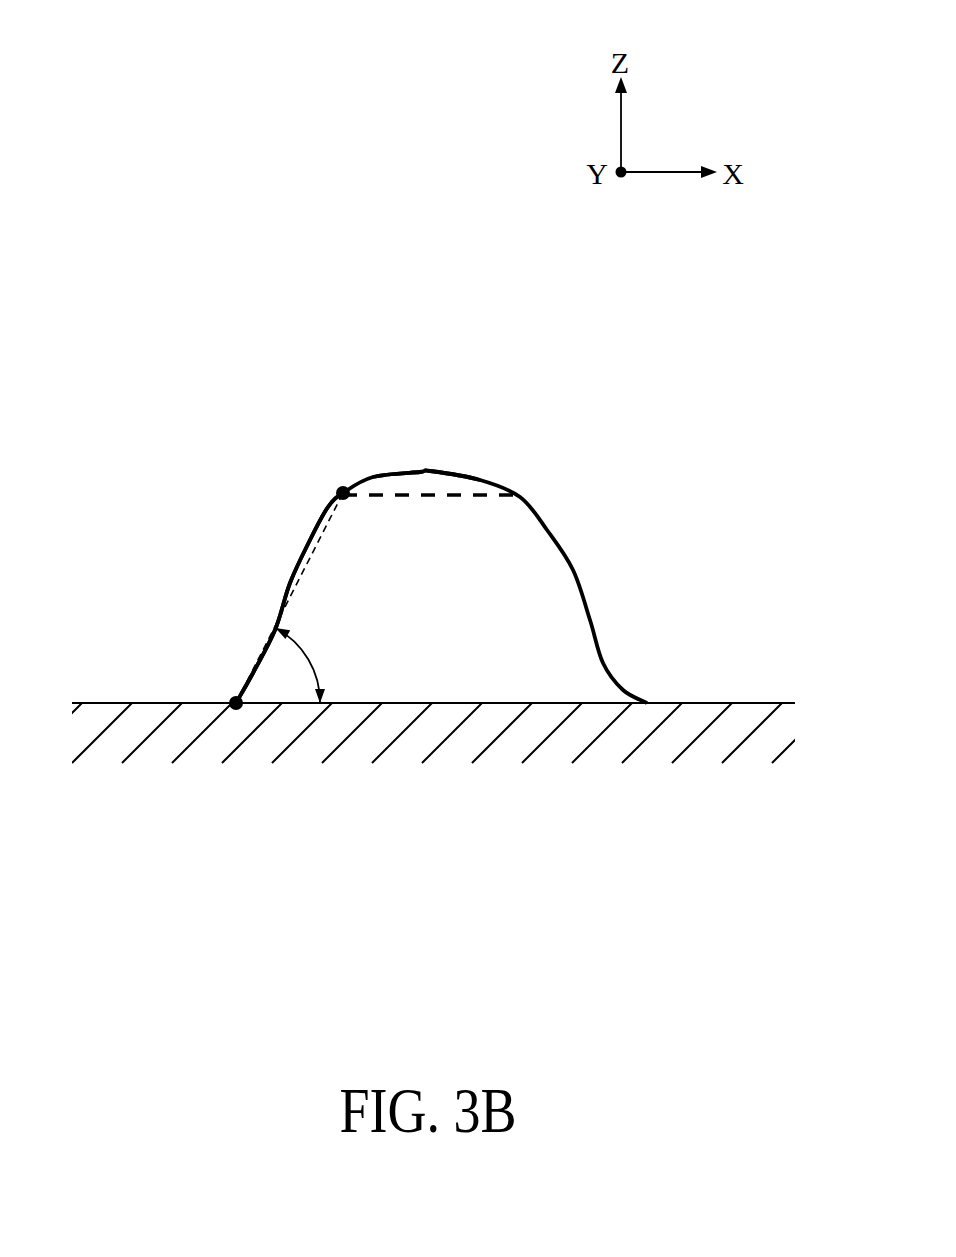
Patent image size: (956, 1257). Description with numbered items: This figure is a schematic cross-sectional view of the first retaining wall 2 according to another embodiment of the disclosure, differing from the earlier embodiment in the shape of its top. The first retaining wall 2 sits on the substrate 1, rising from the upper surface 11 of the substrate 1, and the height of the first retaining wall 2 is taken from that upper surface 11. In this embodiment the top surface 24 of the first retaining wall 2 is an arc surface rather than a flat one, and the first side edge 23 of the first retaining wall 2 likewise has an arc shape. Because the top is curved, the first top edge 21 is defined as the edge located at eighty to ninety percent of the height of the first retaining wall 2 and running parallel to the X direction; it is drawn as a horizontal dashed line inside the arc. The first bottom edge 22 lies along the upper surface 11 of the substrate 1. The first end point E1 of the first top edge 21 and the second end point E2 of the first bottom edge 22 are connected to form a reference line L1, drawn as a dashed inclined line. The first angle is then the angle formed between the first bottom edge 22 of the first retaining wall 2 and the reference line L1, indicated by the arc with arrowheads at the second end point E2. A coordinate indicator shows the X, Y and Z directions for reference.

The substrate 1 is at (684, 733).
The upper surface of the substrate 11 is at (713, 703).
The first retaining wall 2 is at (379, 563).
The first top edge 21 is at (487, 492).
The first bottom edge 22 is at (438, 710).
The first side edge 23 is at (303, 545).
The top surface 24 is at (437, 470).
The first end point E1 is at (337, 475).
The second end point E2 is at (218, 690).
The reference line L1 is at (262, 658).